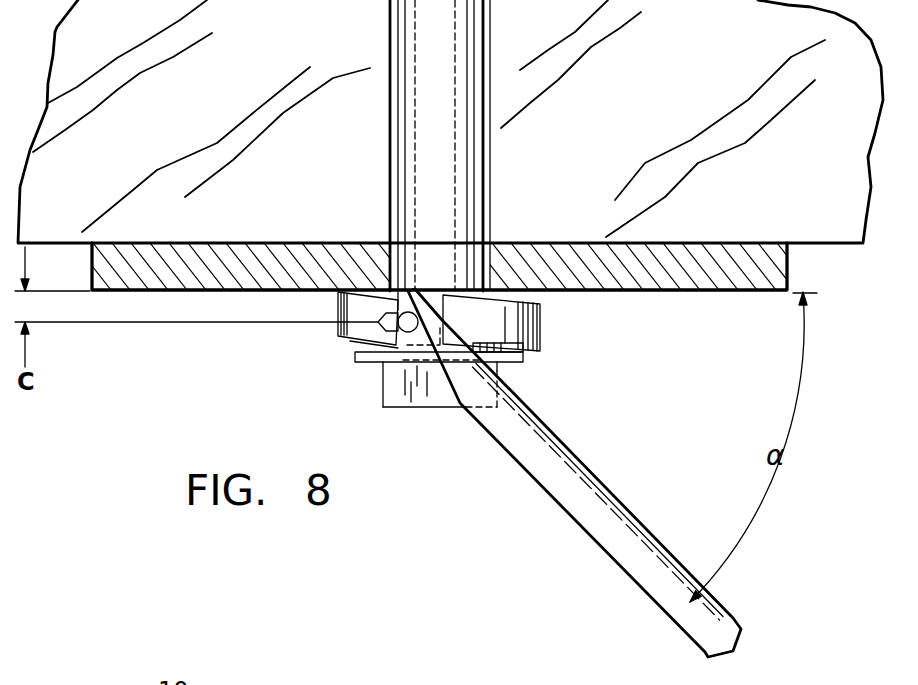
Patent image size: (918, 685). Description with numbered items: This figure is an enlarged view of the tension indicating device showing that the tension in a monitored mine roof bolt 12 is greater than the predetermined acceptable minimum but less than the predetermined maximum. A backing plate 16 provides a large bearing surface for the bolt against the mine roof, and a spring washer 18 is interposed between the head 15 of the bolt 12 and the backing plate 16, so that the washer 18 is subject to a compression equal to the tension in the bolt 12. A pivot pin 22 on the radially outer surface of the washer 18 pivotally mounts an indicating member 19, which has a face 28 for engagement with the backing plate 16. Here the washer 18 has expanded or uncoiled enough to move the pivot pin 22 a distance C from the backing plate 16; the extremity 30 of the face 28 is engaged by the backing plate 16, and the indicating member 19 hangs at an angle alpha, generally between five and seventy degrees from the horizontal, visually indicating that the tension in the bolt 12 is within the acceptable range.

The mine roof bolt 12 is at (410, 136).
The head of the bolt 15 is at (383, 378).
The backing plate 16 is at (444, 266).
The spring washer 18 is at (541, 331).
The indicating member 19 is at (620, 470).
The pivot pin 22 is at (352, 340).
The face 28 is at (563, 447).
The extremity of the face 30 is at (408, 290).